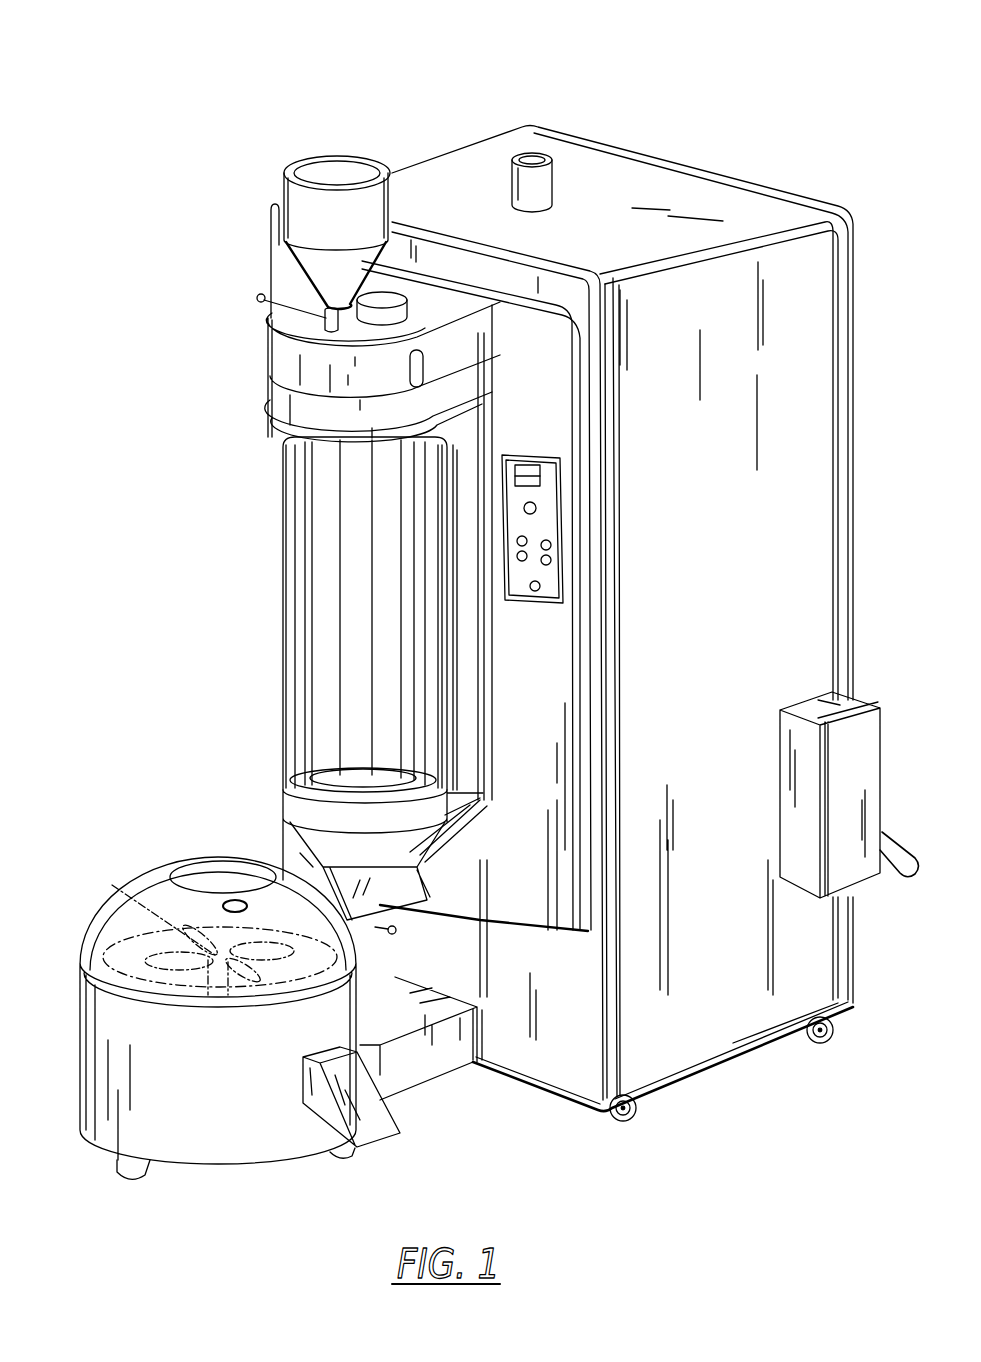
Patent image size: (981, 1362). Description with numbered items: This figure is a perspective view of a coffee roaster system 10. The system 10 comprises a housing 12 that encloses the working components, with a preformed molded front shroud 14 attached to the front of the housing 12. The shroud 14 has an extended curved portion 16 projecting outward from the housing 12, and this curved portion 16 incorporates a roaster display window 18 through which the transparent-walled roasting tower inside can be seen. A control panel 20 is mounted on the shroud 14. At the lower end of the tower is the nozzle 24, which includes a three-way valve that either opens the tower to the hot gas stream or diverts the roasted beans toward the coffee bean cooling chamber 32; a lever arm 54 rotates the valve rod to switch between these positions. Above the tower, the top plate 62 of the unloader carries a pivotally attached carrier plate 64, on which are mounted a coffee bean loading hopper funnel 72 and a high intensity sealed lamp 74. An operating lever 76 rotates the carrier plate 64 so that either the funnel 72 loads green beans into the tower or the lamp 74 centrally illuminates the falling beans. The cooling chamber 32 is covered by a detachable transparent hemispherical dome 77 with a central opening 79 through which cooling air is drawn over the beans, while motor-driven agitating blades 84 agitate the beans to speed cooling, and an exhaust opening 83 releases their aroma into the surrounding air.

The roaster system 10 is at (418, 86).
The housing 12 is at (680, 217).
The front shroud 14 is at (533, 895).
The extended curved portion 16 is at (282, 413).
The roaster display window 18 is at (283, 661).
The control panel 20 is at (526, 592).
The nozzle 24 is at (367, 937).
The coffee bean cooling chamber 32 is at (104, 921).
The lever arm 54 is at (398, 930).
The top surface or plate 62 is at (290, 320).
The carrier plate 64 is at (310, 328).
The coffee bean loading hopper funnel 72 is at (285, 184).
The high intensity sealed lamp 74 is at (385, 304).
The operating lever 76 is at (256, 298).
The transparent hemispherical dome 77 is at (163, 883).
The central opening 79 is at (232, 902).
The exhaust opening 83 is at (380, 1140).
The agitating blades 84 is at (160, 957).